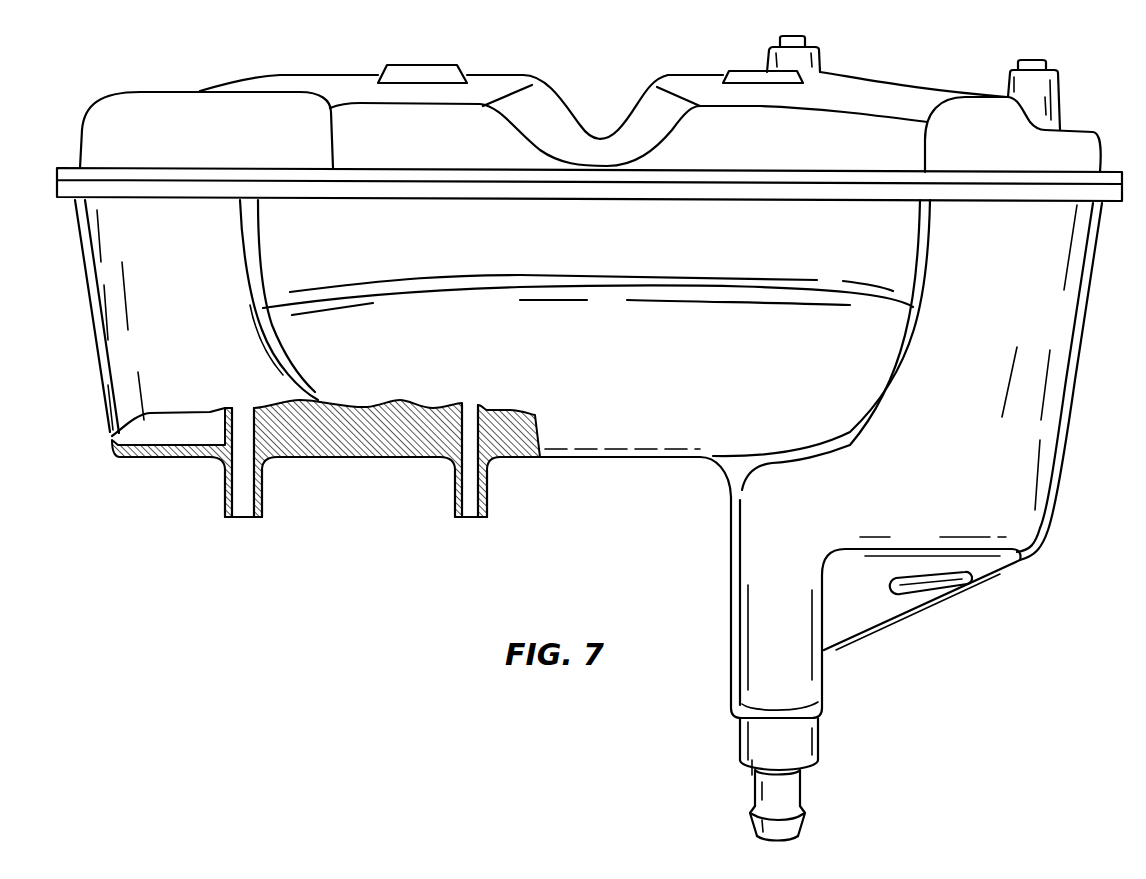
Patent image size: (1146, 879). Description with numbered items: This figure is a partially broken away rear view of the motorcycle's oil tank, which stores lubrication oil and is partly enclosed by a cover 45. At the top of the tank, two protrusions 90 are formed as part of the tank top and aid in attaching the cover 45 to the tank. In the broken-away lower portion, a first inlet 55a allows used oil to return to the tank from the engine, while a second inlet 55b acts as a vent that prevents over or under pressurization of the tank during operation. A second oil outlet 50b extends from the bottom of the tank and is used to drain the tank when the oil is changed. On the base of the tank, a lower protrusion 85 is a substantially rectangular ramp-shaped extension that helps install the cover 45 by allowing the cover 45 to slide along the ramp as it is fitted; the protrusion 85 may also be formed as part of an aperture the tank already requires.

The cover 45 is at (1045, 384).
The second oil outlet 50b is at (802, 788).
The first inlet 55a is at (222, 500).
The second inlet 55b is at (488, 503).
The lower protrusion 85 is at (920, 594).
The protrusions 90 is at (800, 34).